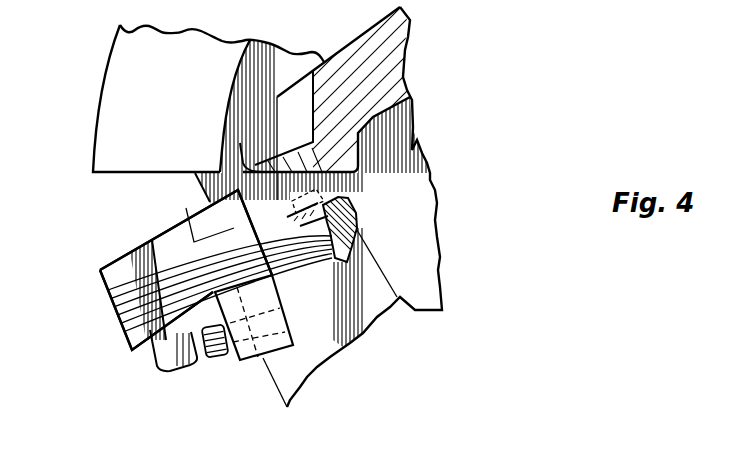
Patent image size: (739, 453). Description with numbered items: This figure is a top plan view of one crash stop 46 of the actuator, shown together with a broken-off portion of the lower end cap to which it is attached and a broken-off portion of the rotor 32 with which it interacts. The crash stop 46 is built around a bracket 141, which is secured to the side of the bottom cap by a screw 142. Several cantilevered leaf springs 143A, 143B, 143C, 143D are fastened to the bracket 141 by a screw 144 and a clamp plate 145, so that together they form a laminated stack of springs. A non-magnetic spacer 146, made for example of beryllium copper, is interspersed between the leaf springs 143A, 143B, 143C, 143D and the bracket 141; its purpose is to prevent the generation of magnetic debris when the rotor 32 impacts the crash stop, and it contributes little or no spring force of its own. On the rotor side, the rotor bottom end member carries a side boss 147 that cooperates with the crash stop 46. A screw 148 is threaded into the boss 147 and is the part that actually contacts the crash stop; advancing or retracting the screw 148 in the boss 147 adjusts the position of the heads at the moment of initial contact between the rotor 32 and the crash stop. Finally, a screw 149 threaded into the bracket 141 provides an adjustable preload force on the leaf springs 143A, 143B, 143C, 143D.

The rotor 32 is at (340, 57).
The crash stop 46 is at (86, 325).
The bracket 141 is at (100, 270).
The screw 142 is at (224, 357).
The leaf spring 143A is at (337, 240).
The leaf spring 143B is at (340, 252).
The leaf spring 143C is at (341, 265).
The leaf spring 143D is at (347, 279).
The screw 144 is at (172, 360).
The clamp plate 145 is at (131, 350).
The non-magnetic spacer 146 is at (355, 219).
The side boss 147 is at (248, 148).
The screw 148 is at (343, 208).
The screw 149 is at (205, 199).